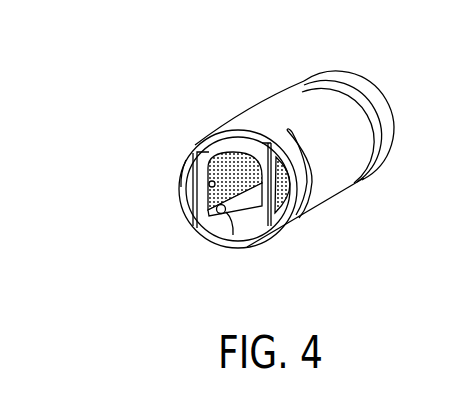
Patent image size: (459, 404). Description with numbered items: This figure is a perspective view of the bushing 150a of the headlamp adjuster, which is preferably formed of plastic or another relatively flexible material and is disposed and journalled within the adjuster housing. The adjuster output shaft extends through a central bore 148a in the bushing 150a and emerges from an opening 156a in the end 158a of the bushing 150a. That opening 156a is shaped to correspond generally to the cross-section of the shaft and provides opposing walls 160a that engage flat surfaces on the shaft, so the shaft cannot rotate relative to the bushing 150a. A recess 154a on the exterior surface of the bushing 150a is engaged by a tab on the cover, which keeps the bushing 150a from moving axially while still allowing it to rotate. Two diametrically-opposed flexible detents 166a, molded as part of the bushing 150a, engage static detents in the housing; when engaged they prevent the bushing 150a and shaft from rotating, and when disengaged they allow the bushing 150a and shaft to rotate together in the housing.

The central bore 148a is at (238, 175).
The bushing 150a is at (234, 99).
The recess 154a is at (353, 105).
The opening 156a is at (222, 211).
The end 158a is at (200, 153).
The opposing walls 160a is at (208, 183).
The flexible detents 166a is at (181, 187).